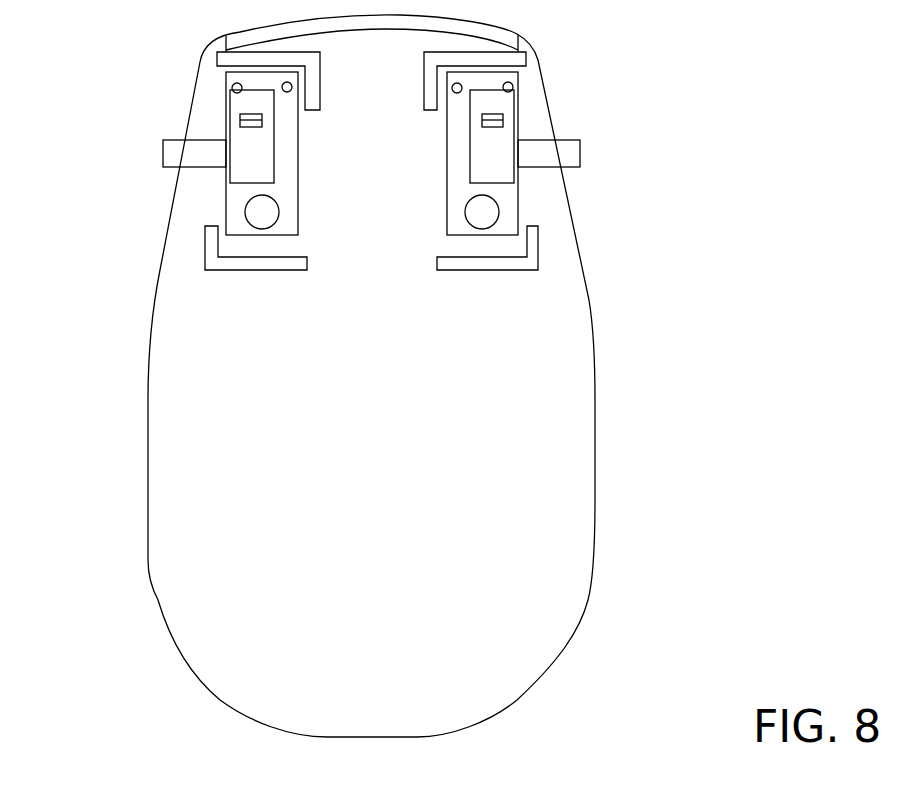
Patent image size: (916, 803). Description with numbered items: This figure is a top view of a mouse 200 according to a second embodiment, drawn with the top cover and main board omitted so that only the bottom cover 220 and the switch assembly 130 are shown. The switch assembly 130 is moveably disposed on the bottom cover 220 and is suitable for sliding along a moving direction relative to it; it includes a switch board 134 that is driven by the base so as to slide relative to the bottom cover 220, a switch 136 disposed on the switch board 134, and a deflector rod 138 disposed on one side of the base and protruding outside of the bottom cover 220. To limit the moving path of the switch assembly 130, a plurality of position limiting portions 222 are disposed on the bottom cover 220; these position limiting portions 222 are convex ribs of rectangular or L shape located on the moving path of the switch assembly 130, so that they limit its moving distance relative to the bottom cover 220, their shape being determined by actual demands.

The mouse 200 is at (443, 376).
The bottom cover 220 is at (572, 383).
The position limiting portions 222 is at (525, 57).
The switch assembly 130 is at (451, 146).
The switch board 134 is at (515, 77).
The switch 136 is at (510, 125).
The deflector rod 138 is at (422, 157).